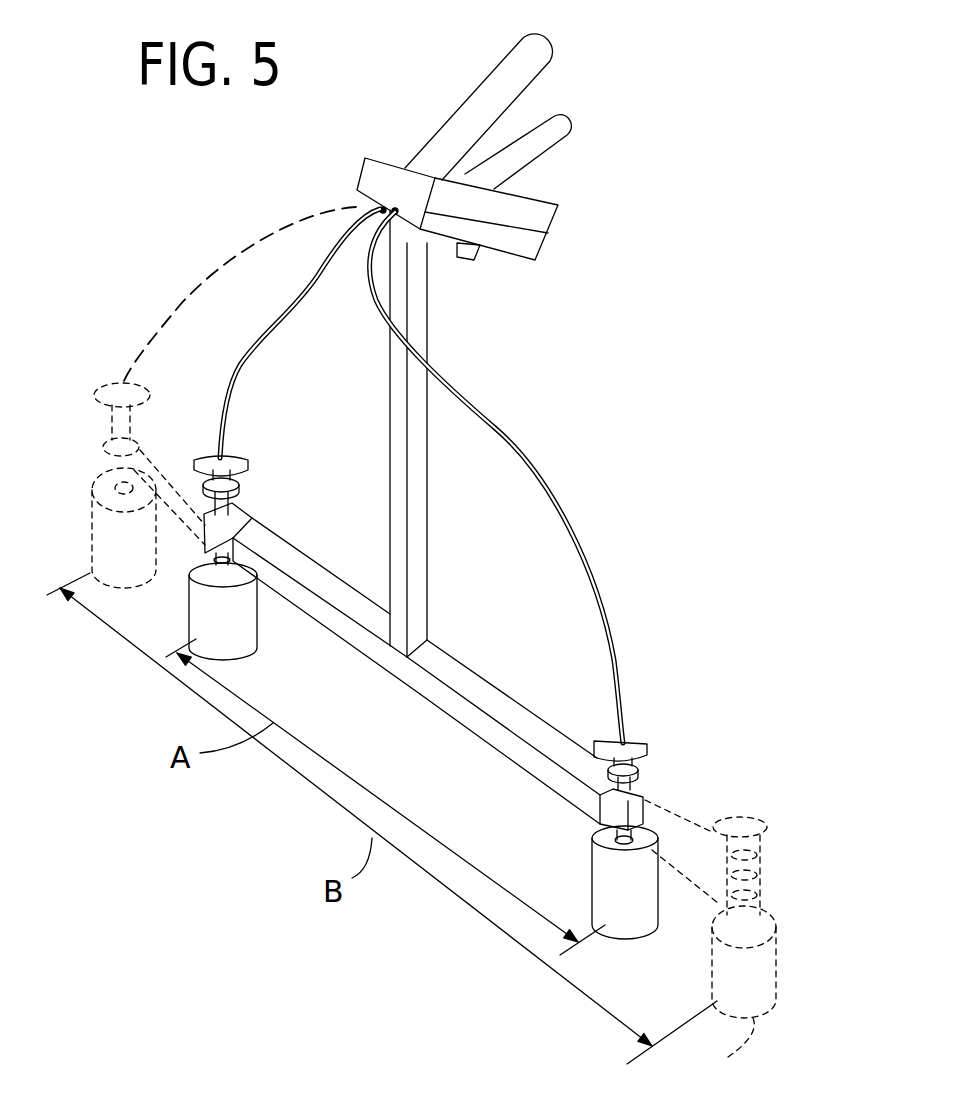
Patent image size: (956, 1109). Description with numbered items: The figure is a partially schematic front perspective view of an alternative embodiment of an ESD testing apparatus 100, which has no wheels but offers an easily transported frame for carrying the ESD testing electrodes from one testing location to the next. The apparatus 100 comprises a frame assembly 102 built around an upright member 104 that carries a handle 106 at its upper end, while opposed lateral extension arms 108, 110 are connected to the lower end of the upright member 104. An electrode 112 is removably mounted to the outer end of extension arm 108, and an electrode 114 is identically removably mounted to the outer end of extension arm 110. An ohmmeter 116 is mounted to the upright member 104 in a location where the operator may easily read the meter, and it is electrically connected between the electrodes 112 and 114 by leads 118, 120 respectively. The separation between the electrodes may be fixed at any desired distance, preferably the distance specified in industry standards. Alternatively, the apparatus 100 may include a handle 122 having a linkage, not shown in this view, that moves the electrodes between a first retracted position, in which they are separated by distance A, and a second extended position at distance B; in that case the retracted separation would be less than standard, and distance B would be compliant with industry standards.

The ESD testing apparatus 100 is at (650, 337).
The frame assembly 102 is at (448, 328).
The upright member 104 is at (417, 508).
The handle 106 is at (540, 73).
The extension arm 108 is at (517, 713).
The extension arm 110 is at (300, 553).
The electrode 112 is at (608, 892).
The electrode 114 is at (245, 610).
The ohmmeter 116 is at (543, 215).
The lead 118 is at (515, 440).
The lead 120 is at (235, 387).
The handle 122 is at (542, 142).